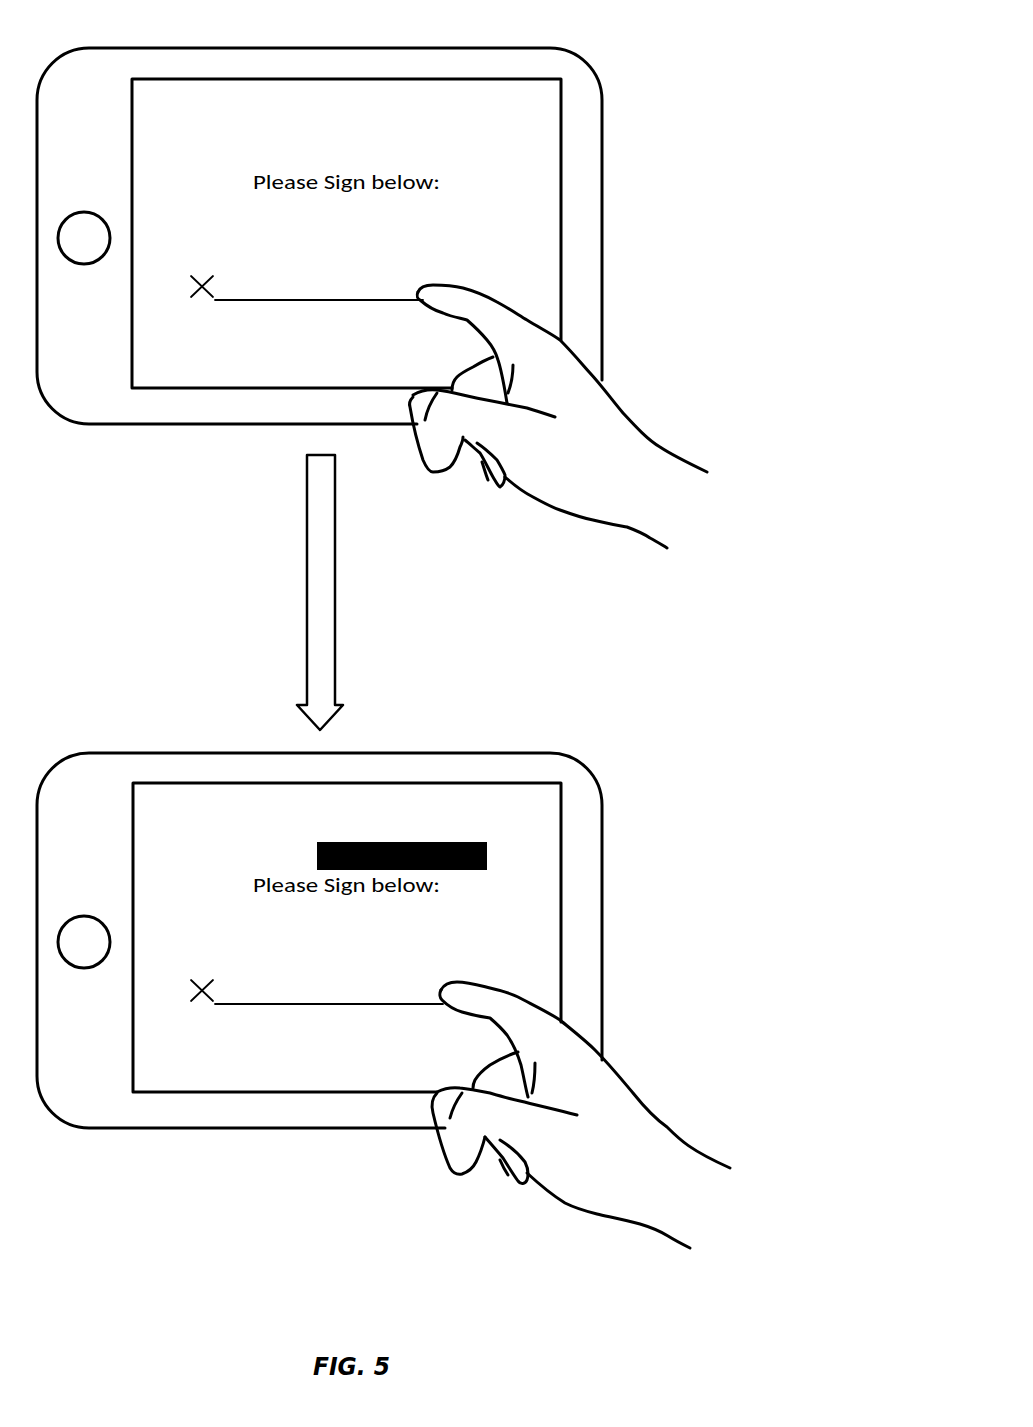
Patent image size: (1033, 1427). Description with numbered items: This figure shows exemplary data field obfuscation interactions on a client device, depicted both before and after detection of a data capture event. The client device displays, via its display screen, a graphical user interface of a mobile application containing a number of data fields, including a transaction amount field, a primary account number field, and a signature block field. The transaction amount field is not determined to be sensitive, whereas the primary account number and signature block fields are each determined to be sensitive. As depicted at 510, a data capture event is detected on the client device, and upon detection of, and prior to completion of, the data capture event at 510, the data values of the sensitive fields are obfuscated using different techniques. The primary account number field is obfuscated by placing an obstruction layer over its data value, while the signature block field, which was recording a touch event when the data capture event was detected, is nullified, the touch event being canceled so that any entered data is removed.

The data capture event detection 510 is at (239, 592).